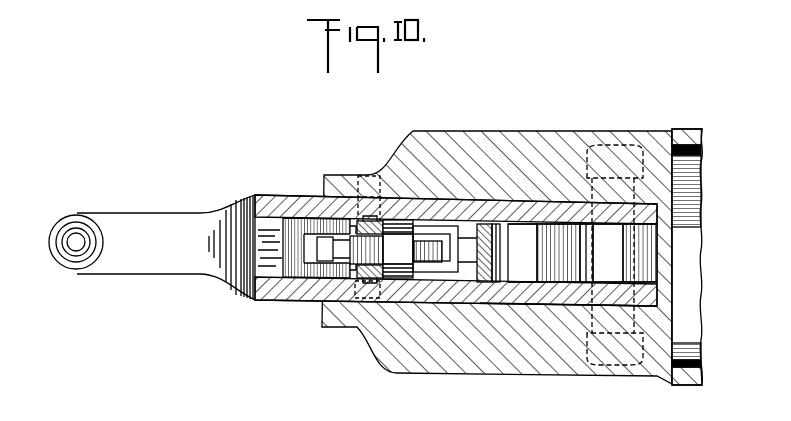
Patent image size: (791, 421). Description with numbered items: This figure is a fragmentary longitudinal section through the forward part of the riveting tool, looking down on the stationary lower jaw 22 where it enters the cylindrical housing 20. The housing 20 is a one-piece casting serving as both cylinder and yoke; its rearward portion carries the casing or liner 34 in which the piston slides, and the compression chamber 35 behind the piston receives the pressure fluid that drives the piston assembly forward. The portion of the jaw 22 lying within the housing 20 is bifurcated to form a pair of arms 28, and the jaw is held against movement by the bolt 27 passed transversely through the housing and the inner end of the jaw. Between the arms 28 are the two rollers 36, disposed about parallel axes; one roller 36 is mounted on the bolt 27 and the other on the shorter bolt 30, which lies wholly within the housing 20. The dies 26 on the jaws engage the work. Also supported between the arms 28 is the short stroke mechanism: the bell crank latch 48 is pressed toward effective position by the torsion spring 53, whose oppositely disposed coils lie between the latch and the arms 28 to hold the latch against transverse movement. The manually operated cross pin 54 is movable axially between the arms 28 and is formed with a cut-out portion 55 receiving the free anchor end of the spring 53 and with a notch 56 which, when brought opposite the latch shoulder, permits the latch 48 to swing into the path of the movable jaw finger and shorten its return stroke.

The cylindrical housing 20 is at (480, 132).
The lower jaw 22 is at (153, 222).
The dies 26 is at (79, 233).
The bolt 27 is at (624, 345).
The arms 28 is at (273, 199).
The bolt 30 is at (531, 306).
The casing or liner 34 is at (695, 152).
The compression chamber 35 is at (693, 237).
The rollers 36 is at (528, 249).
The latch 48 is at (317, 244).
The torsion spring 53 is at (405, 222).
The cross pin 54 is at (356, 225).
The cut-out portion 55 is at (372, 276).
The notch 56 is at (378, 222).